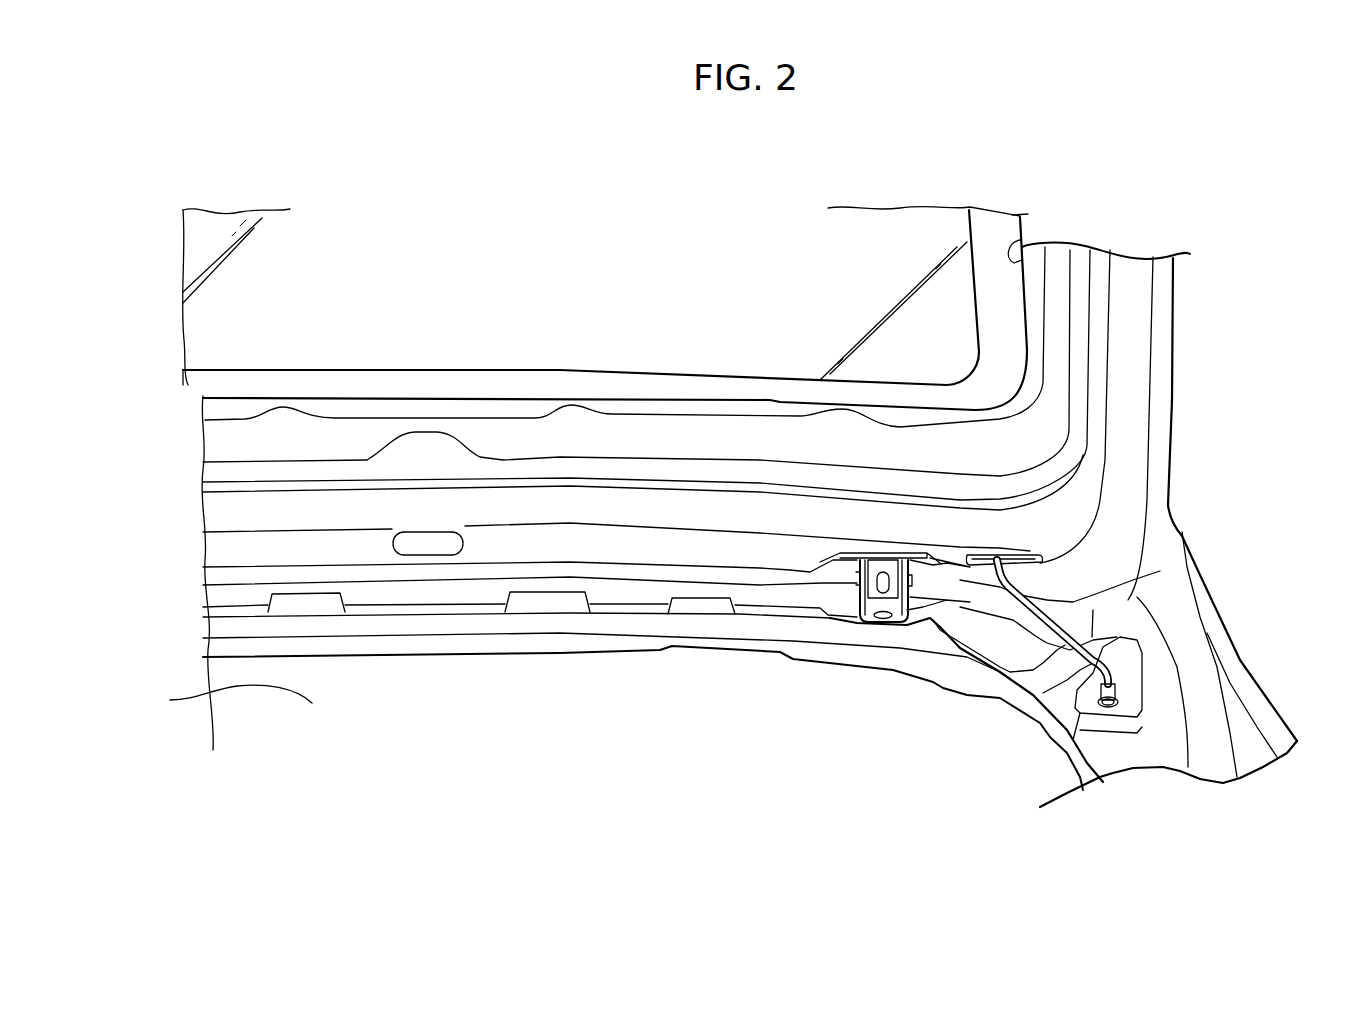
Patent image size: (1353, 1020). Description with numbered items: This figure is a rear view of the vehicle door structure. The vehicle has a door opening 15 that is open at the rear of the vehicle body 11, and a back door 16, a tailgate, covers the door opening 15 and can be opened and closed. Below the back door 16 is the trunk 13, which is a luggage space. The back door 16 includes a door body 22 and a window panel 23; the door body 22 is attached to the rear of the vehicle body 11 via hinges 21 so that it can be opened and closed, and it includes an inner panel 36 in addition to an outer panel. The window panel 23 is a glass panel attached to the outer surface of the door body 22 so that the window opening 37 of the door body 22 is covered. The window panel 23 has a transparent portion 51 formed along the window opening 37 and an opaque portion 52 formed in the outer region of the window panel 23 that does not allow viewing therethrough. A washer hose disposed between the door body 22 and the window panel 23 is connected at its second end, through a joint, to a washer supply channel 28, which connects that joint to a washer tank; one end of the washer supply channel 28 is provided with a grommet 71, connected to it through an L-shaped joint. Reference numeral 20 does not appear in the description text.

The vehicle body 11 is at (1205, 518).
The trunk 13 is at (173, 701).
The door opening 15 is at (1055, 757).
The back door 16 is at (1159, 411).
The roof side structure 20 is at (252, 190).
The hinge 21 is at (870, 583).
The door body 22 is at (1175, 283).
The window panel 23 is at (611, 249).
The washer supply channel 28 is at (1122, 636).
The inner panel 36 is at (1142, 315).
The window opening 37 is at (1018, 243).
The transparent portion 51 is at (890, 255).
The opaque portion 52 is at (982, 225).
The grommet 71 is at (1020, 557).